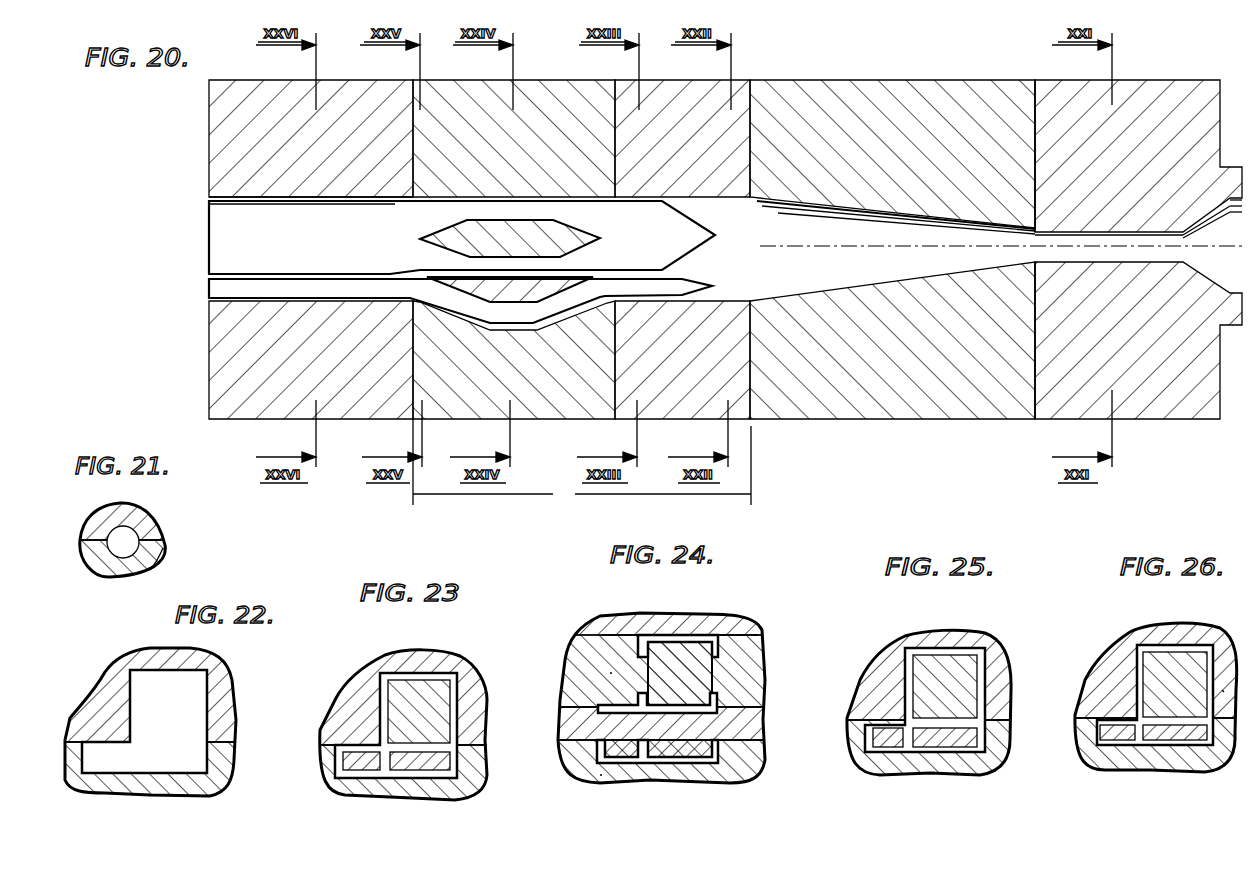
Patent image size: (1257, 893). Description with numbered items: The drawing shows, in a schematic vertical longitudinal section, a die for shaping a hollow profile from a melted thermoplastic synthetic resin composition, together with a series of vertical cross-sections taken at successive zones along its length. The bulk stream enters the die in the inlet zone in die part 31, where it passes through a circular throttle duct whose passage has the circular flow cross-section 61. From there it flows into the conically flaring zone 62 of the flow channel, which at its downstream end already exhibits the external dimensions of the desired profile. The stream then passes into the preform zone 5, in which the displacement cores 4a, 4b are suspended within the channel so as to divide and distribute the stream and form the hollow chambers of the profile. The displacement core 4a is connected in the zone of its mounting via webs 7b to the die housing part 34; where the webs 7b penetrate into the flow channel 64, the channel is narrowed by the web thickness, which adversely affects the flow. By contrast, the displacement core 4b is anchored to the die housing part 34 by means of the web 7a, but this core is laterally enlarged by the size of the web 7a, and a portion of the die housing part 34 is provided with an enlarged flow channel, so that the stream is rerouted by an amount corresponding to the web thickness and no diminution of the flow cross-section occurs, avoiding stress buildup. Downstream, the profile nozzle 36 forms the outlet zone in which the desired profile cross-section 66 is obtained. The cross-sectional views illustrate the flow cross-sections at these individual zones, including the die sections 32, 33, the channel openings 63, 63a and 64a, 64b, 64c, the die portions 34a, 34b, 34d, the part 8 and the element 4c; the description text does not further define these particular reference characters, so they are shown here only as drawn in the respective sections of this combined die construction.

In FIG. 20, the displacement core 4a is at (638, 234).
In FIG. 23, the displacement core 4a is at (396, 700).
In FIG. 24, the displacement core 4a is at (680, 640).
In FIG. 25, the displacement core 4a is at (960, 688).
In FIG. 26, the displacement core 4a is at (1160, 672).
In FIG. 20, the displacement core 4b is at (620, 288).
In FIG. 23, the displacement core 4b is at (440, 760).
In FIG. 25, the displacement core 4b is at (970, 736).
In FIG. 26, the displacement core 4b is at (1194, 742).
In FIG. 23, the spacer strip 4c is at (338, 776).
In FIG. 25, the spacer strip 4c is at (870, 742).
In FIG. 26, the spacer strip 4c is at (1108, 748).
In FIG. 20, the preform zone 5 is at (582, 462).
In FIG. 20, the web 7a is at (462, 291).
In FIG. 24, the web 7a is at (742, 728).
In FIG. 20, the webs 7b is at (452, 238).
In FIG. 24, the webs 7b is at (638, 673).
In FIG. 20, the die body 8 is at (754, 98).
In FIG. 21, the die body 8 is at (155, 550).
In FIG. 24, the die body 8 is at (570, 746).
In FIG. 26, the die body 8 is at (1224, 694).
In FIG. 20, the die part 31 is at (1184, 90).
In FIG. 21, the die part 31 is at (143, 527).
In FIG. 20, the converging die block 32 is at (1020, 92).
In FIG. 20, the die block 33 is at (698, 94).
In FIG. 22, the die block 33 is at (222, 694).
In FIG. 23, the die block 33 is at (470, 704).
In FIG. 20, the die housing part 34 is at (582, 96).
In FIG. 24, the die housing part 34 is at (570, 712).
In FIG. 25, the die housing part 34 is at (888, 662).
In FIG. 24, the die block top plate 34a is at (618, 622).
In FIG. 24, the die block side part 34b is at (596, 650).
In FIG. 24, the die block bottom plate 34d is at (596, 774).
In FIG. 20, the profile nozzle 36 is at (376, 98).
In FIG. 26, the profile nozzle 36 is at (1206, 634).
In FIG. 20, the circular flow cross-section 61 is at (1158, 266).
In FIG. 21, the circular flow cross-section 61 is at (100, 511).
In FIG. 20, the conically flaring zone 62 is at (926, 276).
In FIG. 22, the rectangular channel 63 is at (158, 670).
In FIG. 23, the channel 63a is at (448, 670).
In FIG. 25, the flow channel 64 is at (964, 644).
In FIG. 24, the upper groove 64a is at (714, 640).
In FIG. 24, the middle groove 64b is at (724, 704).
In FIG. 24, the lower groove 64c is at (734, 758).
In FIG. 20, the profile cross-section 66 is at (212, 300).
In FIG. 26, the profile cross-section 66 is at (1212, 682).